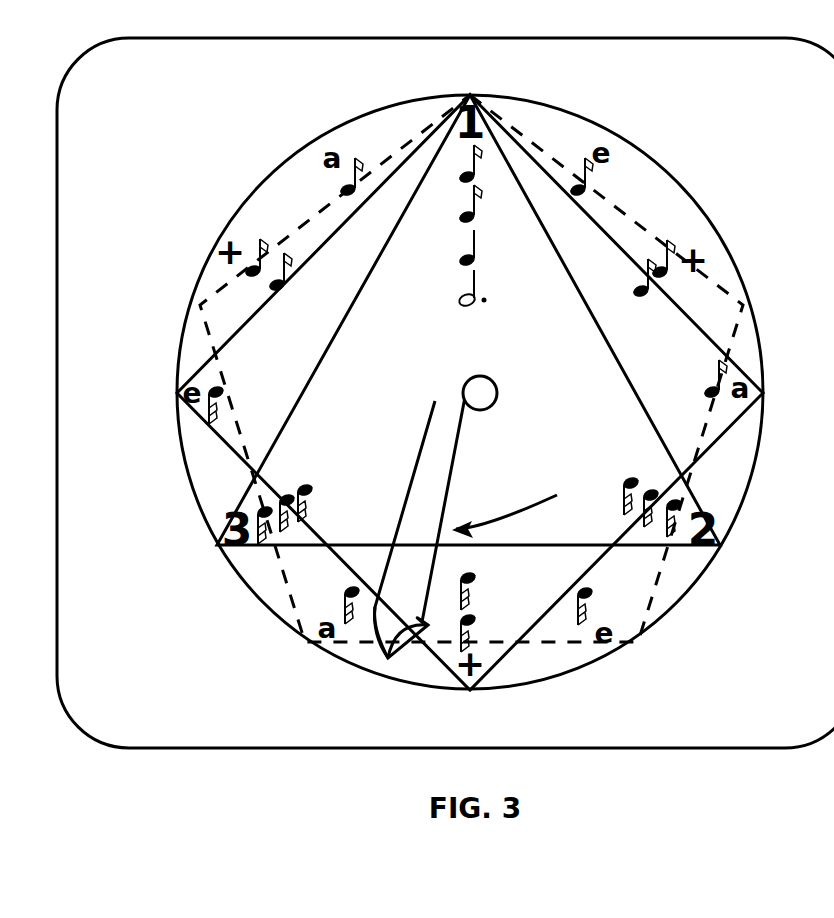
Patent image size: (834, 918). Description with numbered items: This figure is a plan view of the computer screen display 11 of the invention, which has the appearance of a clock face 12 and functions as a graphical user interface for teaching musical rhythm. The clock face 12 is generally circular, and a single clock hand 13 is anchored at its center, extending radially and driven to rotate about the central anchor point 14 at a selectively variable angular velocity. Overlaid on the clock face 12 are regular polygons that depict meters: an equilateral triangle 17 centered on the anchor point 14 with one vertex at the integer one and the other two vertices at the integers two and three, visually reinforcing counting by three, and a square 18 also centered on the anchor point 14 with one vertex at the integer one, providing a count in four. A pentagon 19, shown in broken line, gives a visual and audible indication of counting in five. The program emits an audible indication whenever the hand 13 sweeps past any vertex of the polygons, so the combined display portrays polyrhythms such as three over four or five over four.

The screen display 11 is at (82, 60).
The clock face 12 is at (225, 183).
The clock hand 13 is at (476, 457).
The central anchor point 14 is at (480, 393).
The equilateral triangle 17 is at (340, 333).
The square 18 is at (262, 315).
The pentagon 19 is at (666, 592).